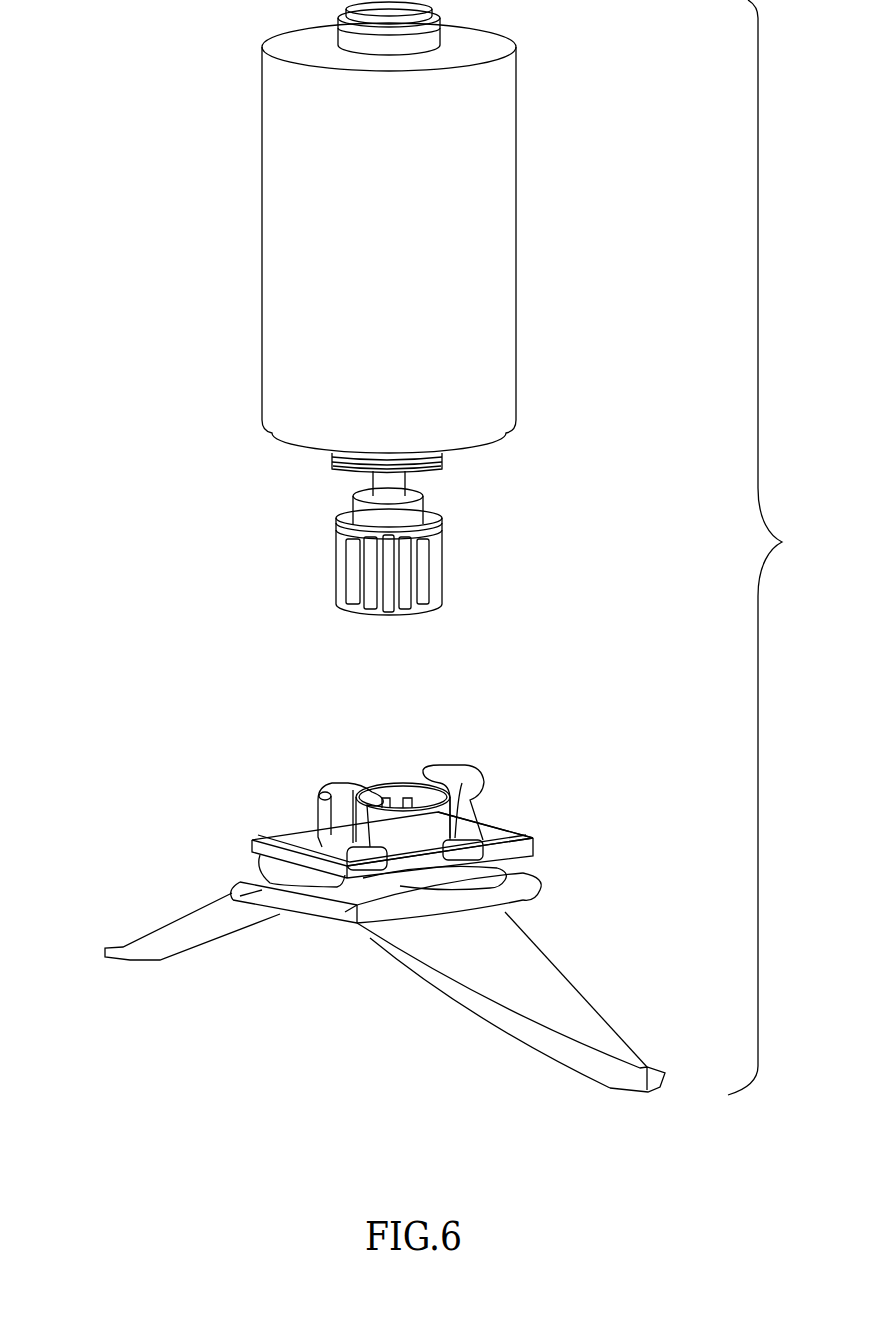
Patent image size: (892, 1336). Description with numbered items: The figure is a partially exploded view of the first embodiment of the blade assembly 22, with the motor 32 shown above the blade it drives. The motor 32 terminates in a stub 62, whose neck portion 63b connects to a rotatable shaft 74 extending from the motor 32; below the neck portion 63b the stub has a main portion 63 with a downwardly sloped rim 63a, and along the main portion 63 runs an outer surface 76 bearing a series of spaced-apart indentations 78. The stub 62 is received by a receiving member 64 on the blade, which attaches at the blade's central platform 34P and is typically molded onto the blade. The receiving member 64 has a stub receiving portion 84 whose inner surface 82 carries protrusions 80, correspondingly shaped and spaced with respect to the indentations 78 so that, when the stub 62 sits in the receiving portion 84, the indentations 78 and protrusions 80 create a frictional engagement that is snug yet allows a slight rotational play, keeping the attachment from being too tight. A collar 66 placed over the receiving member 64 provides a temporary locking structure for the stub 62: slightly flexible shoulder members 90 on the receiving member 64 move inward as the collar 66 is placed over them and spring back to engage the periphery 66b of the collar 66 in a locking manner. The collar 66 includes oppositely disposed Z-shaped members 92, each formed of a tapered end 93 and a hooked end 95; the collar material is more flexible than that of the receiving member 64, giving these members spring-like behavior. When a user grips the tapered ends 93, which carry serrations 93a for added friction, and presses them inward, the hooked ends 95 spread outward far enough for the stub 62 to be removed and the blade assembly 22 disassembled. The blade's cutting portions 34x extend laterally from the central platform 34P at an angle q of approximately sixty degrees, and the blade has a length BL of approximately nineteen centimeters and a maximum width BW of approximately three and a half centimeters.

The blade assembly 22 is at (777, 547).
The motor 32 is at (393, 268).
The rotatable shaft 74 is at (392, 485).
The main portion 63 is at (337, 573).
The downwardly sloped rim 63a is at (340, 511).
The neck portion 63b is at (397, 516).
The outer surface 76 is at (362, 588).
The indentations 78 is at (406, 603).
The stub 62 is at (446, 584).
The stub receiving portion 84 is at (426, 801).
The protrusions 80 is at (385, 797).
The inner surface 82 is at (406, 797).
The hooked end 95 is at (362, 793).
The Z-shaped members 92 is at (335, 820).
The receiving member 64 is at (540, 844).
The collar 66 is at (563, 843).
The periphery 66b is at (520, 838).
The central platform 34P is at (542, 889).
The tapered end 93 is at (282, 868).
The serrations 93a is at (235, 870).
The cutting portions 34x is at (172, 938).
The shoulder members 90 is at (485, 888).
The maximum width BW is at (500, 910).
The length BL is at (655, 1148).
The angle q is at (288, 927).